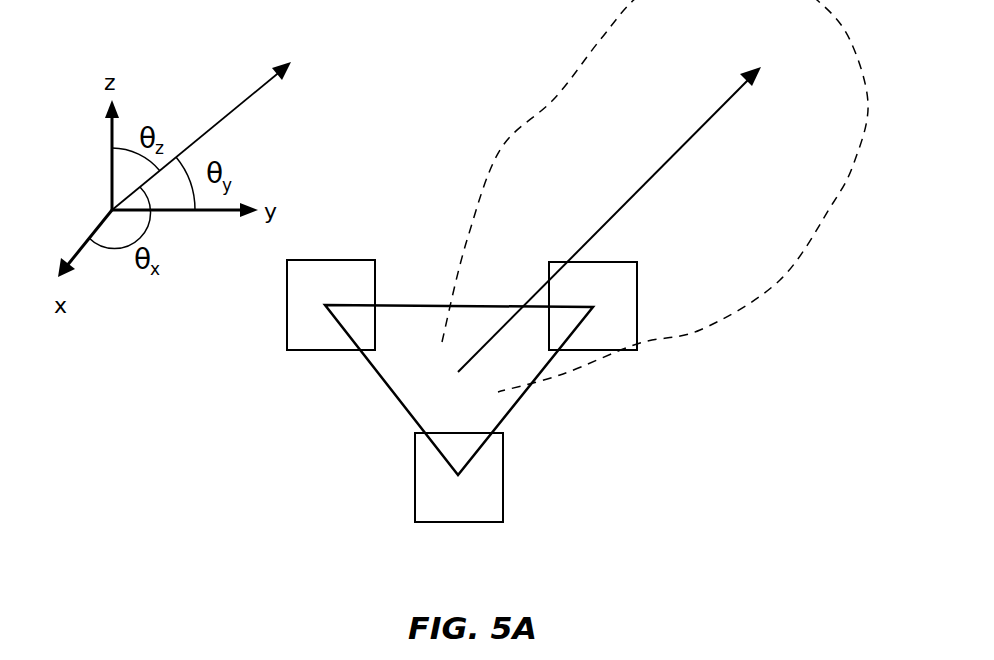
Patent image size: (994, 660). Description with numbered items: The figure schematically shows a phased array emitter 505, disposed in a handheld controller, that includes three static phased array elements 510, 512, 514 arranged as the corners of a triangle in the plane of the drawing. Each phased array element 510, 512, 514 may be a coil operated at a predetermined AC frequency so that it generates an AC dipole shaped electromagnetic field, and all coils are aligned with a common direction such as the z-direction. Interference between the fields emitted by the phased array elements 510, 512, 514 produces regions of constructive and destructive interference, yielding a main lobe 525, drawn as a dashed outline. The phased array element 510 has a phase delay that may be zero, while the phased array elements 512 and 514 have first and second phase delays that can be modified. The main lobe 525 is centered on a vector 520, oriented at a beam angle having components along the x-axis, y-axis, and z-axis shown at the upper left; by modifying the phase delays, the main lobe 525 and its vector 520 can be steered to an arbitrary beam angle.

The phased array emitter 505 is at (296, 489).
The phased array element 510 is at (503, 475).
The phased array element 512 is at (287, 307).
The phased array element 514 is at (637, 283).
The vector 520 is at (257, 88).
The main lobe 525 is at (830, 203).